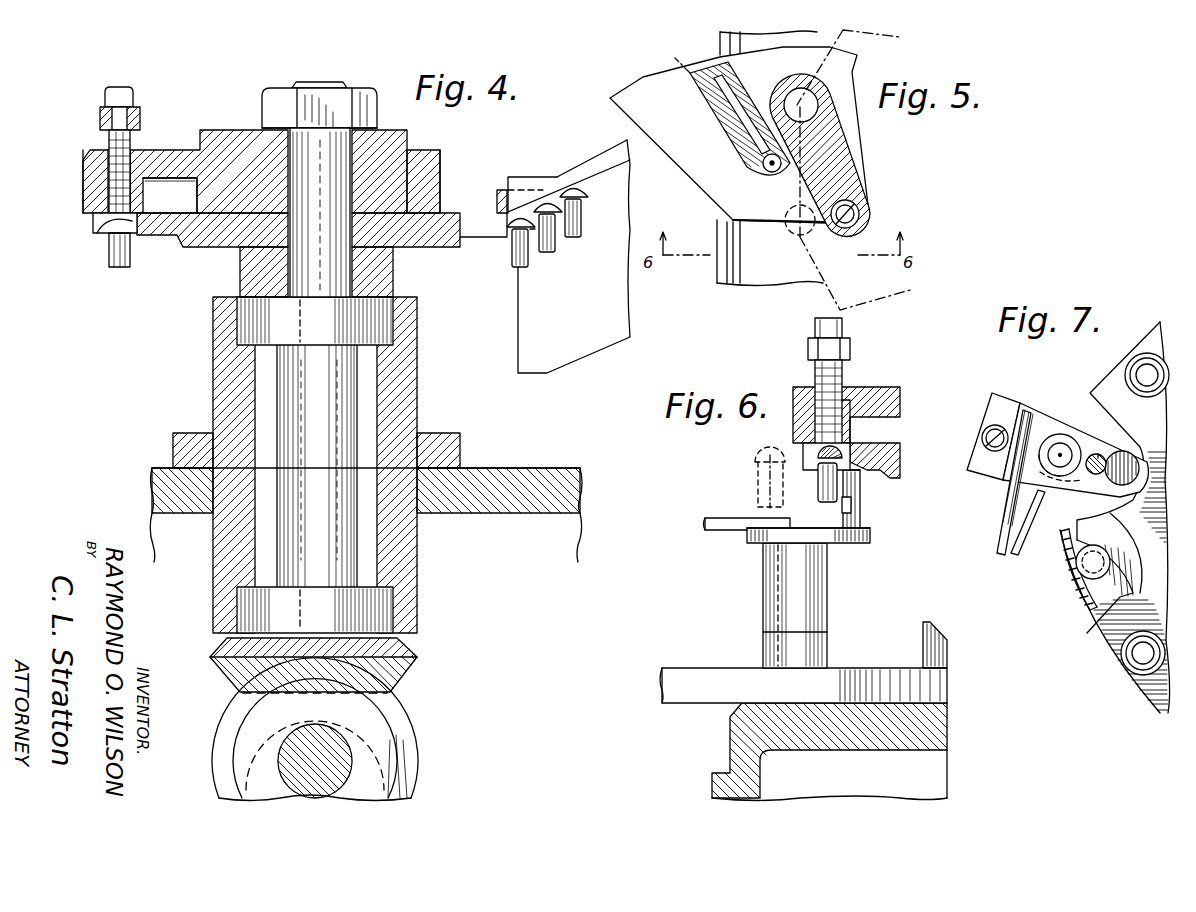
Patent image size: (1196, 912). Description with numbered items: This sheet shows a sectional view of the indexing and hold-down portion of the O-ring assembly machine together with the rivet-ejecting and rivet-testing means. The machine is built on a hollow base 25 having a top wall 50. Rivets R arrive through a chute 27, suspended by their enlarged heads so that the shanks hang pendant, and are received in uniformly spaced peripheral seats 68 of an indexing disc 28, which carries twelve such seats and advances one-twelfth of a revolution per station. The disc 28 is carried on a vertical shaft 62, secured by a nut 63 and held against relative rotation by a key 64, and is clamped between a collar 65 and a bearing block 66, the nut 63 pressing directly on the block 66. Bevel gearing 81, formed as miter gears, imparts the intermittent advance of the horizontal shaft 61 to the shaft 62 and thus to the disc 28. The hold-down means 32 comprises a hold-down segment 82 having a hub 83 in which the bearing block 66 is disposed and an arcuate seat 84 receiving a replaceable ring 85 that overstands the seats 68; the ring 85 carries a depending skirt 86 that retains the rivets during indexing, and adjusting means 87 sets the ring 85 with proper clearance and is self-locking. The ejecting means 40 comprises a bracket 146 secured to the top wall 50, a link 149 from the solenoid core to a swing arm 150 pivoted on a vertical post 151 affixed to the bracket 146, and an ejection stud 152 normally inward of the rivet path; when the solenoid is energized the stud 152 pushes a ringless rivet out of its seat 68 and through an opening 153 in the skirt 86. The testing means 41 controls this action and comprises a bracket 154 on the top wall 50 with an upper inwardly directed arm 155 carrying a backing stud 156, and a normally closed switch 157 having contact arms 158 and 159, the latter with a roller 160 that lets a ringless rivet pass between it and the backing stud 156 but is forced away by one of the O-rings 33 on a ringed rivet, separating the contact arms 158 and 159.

In FIG. 4, the base 25 is at (553, 461).
In FIG. 4, the chute 27 is at (592, 162).
In FIG. 4, the indexing disc 28 is at (228, 250).
In FIG. 4, the hold-down means 32 is at (80, 185).
In FIG. 7, the O-rings 33 is at (1090, 475).
In FIG. 5, the rivet-ejecting means 40 is at (862, 153).
In FIG. 6, the rivet-ejecting means 40 is at (843, 548).
In FIG. 7, the O-ring testing means 41 is at (1078, 412).
In FIG. 4, the top wall 50 is at (512, 495).
In FIG. 5, the top wall 50 is at (778, 270).
In FIG. 6, the top wall 50 is at (877, 730).
In FIG. 4, the shaft 61 is at (333, 756).
In FIG. 4, the vertical shaft 62 is at (290, 372).
In FIG. 4, the nut 63 is at (272, 88).
In FIG. 4, the key 64 is at (360, 158).
In FIG. 4, the collar 65 is at (393, 275).
In FIG. 4, the bearing block 66 is at (405, 175).
In FIG. 4, the peripheral seats 68 is at (508, 232).
In FIG. 6, the peripheral seats 68 is at (862, 470).
In FIG. 7, the peripheral seats 68 is at (1085, 585).
In FIG. 4, the bevel gearing 81 is at (395, 705).
In FIG. 4, the hold-down segment 82 is at (170, 160).
In FIG. 6, the hold-down segment 82 is at (898, 393).
In FIG. 7, the hold-down segment 82 is at (1160, 703).
In FIG. 4, the hub 83 is at (432, 180).
In FIG. 4, the arcuate seat 84 is at (102, 185).
In FIG. 4, the ring 85 is at (150, 195).
In FIG. 6, the ring 85 is at (860, 405).
In FIG. 7, the ring 85 is at (1102, 618).
In FIG. 4, the skirt 86 is at (100, 222).
In FIG. 4, the adjusting means 87 is at (134, 112).
In FIG. 6, the adjusting means 87 is at (812, 349).
In FIG. 7, the adjusting means 87 is at (1130, 665).
In FIG. 5, the bracket 146 is at (694, 172).
In FIG. 6, the bracket 146 is at (698, 680).
In FIG. 5, the link 149 is at (700, 100).
In FIG. 6, the link 149 is at (714, 531).
In FIG. 5, the swing arm 150 is at (853, 178).
In FIG. 6, the swing arm 150 is at (870, 536).
In FIG. 5, the vertical post 151 is at (795, 92).
In FIG. 6, the vertical post 151 is at (812, 618).
In FIG. 5, the ejection stud 152 is at (862, 214).
In FIG. 6, the ejection stud 152 is at (840, 503).
In FIG. 6, the opening 153 is at (805, 456).
In FIG. 7, the bracket 154 is at (1000, 481).
In FIG. 7, the arm 155 is at (1113, 484).
In FIG. 7, the backing stud 156 is at (1130, 455).
In FIG. 7, the switch 157 is at (995, 556).
In FIG. 7, the contact arm 158 is at (1022, 548).
In FIG. 7, the contact arm 159 is at (1005, 518).
In FIG. 7, the roller 160 is at (1060, 432).
In FIG. 4, the rivets R is at (112, 260).
In FIG. 6, the rivets R is at (817, 486).
In FIG. 7, the rivets R is at (1098, 454).